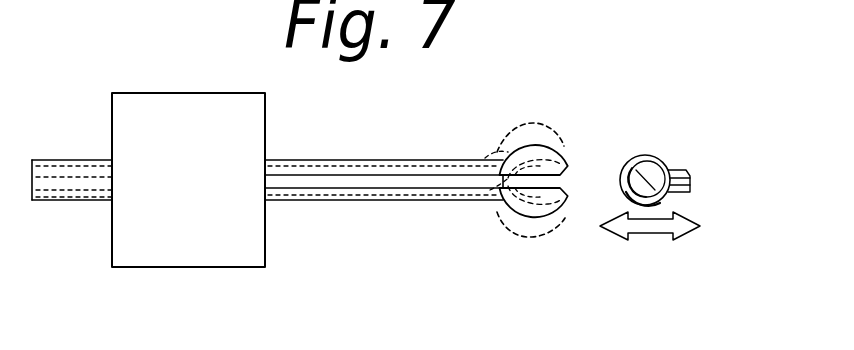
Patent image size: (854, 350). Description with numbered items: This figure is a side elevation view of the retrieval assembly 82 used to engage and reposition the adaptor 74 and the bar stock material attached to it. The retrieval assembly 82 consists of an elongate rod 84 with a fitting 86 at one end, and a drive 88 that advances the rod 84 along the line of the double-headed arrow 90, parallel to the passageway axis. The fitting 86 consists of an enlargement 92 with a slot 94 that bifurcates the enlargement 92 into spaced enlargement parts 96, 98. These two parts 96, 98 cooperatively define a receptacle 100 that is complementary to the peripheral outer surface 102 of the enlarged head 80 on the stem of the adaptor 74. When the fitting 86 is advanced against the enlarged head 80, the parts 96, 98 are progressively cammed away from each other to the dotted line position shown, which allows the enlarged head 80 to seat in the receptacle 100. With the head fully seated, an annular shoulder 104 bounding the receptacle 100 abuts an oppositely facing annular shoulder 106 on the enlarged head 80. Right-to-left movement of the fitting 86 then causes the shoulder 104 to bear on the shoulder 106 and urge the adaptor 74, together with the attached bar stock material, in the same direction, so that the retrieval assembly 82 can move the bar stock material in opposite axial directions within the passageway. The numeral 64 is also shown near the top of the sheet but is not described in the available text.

The input shaft 64 is at (72, 100).
The adaptor 74 is at (671, 165).
The enlarged head 80 is at (700, 226).
The retrieval assembly 82 is at (301, 228).
The elongate rod 84 is at (347, 165).
The fitting 86 is at (535, 138).
The drive 88 is at (175, 204).
The double-headed arrow 90 is at (657, 228).
The enlargement 92 is at (528, 219).
The slot 94 is at (581, 160).
The enlargement part 96 is at (524, 152).
The enlargement part 98 is at (537, 240).
The receptacle 100 is at (495, 152).
The peripheral outer surface 102 is at (658, 160).
The annular shoulder 104 is at (490, 190).
The annular shoulder 106 is at (663, 165).